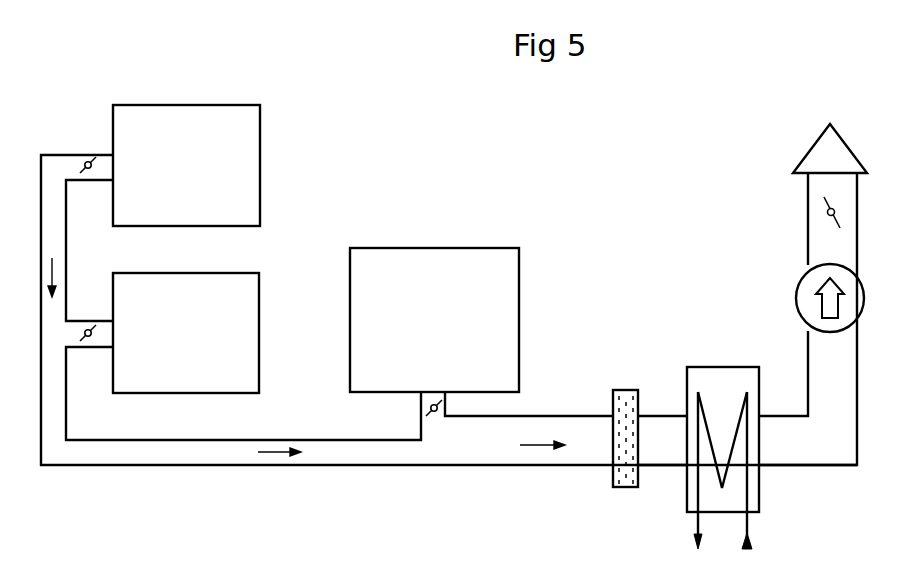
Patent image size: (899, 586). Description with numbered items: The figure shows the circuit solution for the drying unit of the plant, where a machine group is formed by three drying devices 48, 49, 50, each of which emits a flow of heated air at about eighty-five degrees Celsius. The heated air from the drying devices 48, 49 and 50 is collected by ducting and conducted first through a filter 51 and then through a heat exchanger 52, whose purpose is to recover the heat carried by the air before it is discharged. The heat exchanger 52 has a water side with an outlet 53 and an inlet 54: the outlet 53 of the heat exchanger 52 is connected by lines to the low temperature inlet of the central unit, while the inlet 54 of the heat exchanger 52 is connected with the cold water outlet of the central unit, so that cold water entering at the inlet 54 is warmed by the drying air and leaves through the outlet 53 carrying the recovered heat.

The drying device 48 is at (252, 141).
The drying device 49 is at (251, 312).
The drying device 50 is at (456, 262).
The filter 51 is at (636, 388).
The heat exchanger 52 is at (721, 378).
The outlet of the heat exchanger 53 is at (694, 524).
The inlet of the heat exchanger 54 is at (749, 525).